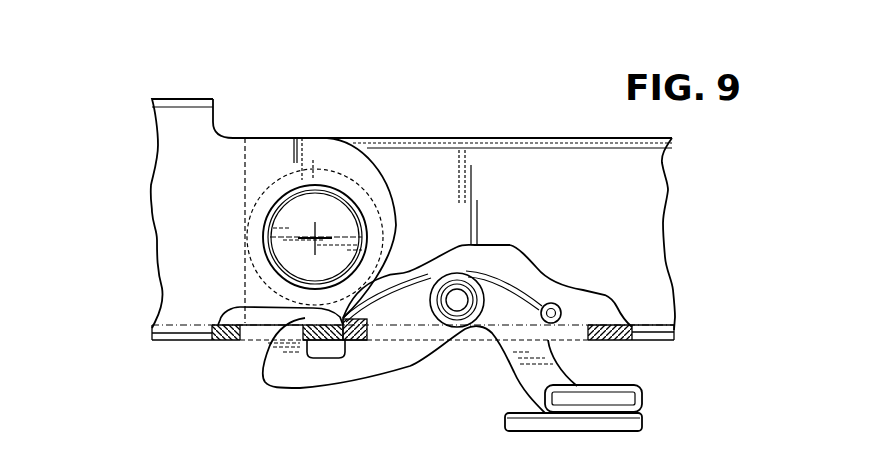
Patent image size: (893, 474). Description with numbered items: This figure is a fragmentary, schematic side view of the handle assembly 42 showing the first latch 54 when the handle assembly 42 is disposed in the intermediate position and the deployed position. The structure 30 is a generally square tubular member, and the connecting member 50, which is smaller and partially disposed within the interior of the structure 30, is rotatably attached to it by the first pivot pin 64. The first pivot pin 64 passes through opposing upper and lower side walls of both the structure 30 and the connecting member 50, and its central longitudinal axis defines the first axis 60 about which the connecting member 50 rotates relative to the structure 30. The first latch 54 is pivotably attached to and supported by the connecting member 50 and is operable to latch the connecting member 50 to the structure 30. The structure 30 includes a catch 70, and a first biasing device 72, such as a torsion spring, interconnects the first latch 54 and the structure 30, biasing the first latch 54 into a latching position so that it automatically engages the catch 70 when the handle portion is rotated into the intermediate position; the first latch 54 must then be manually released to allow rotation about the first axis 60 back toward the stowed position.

The structure 30 is at (190, 173).
The handle assembly 42 is at (533, 106).
The connecting member 50 is at (642, 192).
The first latch 54 is at (363, 358).
The first axis 60 is at (314, 237).
The first pivot pin 64 is at (287, 257).
The catch 70 is at (303, 325).
The first biasing device 72 is at (517, 283).